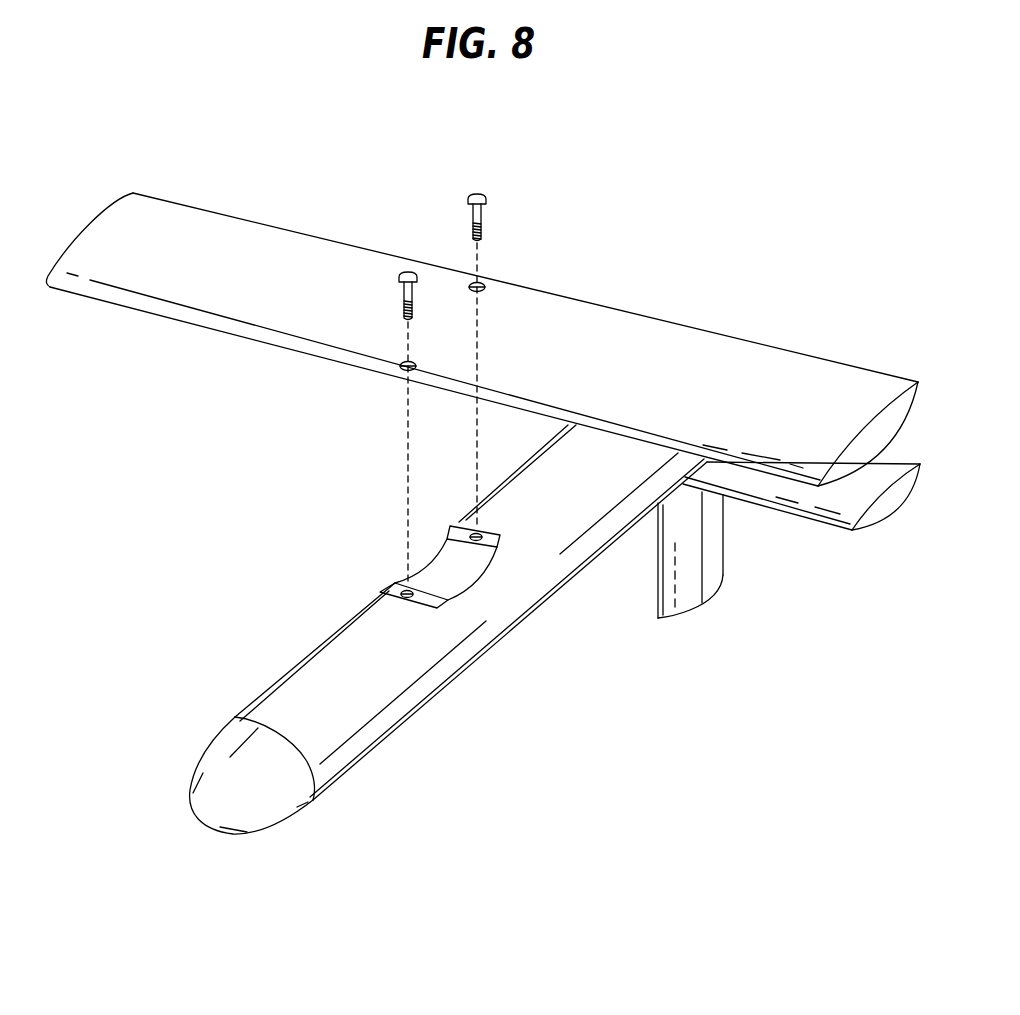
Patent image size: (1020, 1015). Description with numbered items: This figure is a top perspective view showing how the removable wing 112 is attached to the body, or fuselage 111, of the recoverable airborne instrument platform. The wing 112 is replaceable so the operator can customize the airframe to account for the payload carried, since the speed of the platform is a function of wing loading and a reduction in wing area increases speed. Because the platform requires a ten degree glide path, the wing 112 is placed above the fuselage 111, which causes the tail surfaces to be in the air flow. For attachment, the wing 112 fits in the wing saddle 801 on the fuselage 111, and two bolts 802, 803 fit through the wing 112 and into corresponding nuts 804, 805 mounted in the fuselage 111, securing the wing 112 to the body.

The fuselage 111 is at (487, 636).
The wing 112 is at (735, 338).
The wing saddle 801 is at (440, 537).
The bolt 802 is at (402, 296).
The bolt 803 is at (482, 214).
The nut 804 is at (396, 588).
The nut 805 is at (463, 525).